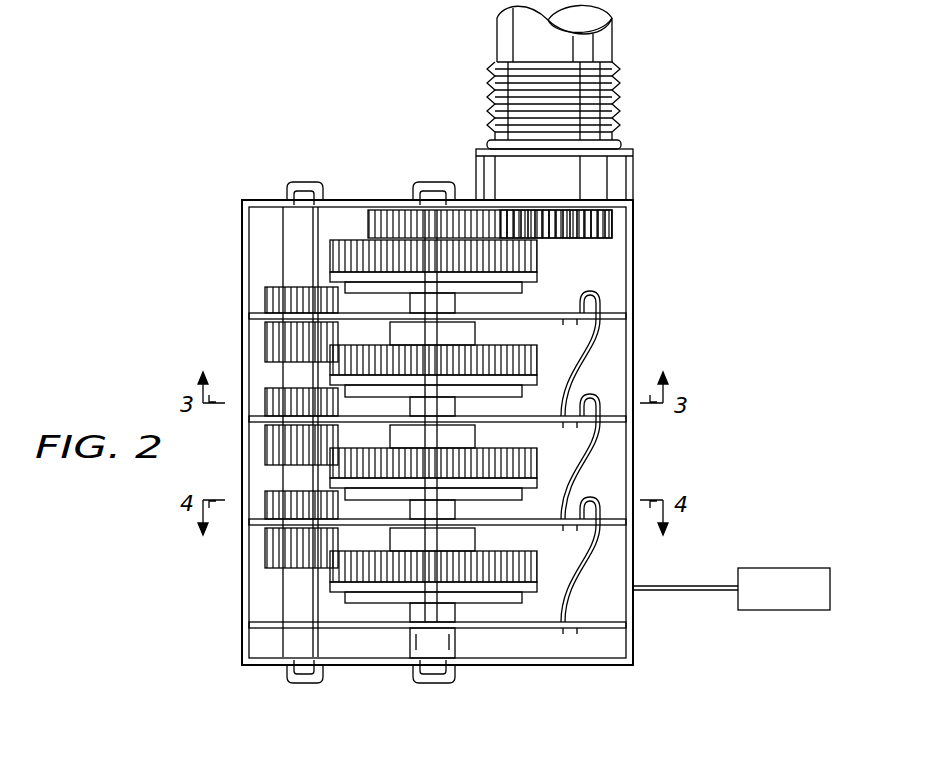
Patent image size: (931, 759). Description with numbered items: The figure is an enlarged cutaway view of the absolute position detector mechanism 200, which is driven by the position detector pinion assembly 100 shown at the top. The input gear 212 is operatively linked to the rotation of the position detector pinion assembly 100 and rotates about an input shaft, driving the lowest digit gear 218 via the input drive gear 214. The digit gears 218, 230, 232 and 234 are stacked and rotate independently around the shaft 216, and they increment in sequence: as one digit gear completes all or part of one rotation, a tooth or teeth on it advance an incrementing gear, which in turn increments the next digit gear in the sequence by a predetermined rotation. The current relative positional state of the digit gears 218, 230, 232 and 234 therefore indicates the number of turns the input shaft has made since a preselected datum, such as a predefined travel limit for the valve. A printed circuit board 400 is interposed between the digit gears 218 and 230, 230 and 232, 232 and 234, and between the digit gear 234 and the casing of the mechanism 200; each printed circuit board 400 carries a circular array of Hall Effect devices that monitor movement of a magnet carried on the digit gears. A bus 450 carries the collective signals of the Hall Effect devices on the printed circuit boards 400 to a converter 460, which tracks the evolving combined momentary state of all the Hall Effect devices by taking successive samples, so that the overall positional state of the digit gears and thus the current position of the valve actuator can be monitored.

The position detector pinion assembly 100 is at (612, 44).
The absolute position detector mechanism 200 is at (228, 612).
The input gear 212 is at (567, 240).
The input drive gear 214 is at (382, 222).
The shaft 216 is at (456, 640).
The lowest digit gear 218 is at (330, 258).
The digit gear 230 is at (537, 358).
The digit gear 232 is at (537, 462).
The digit gear 234 is at (380, 604).
The printed circuit board 400 is at (590, 322).
The bus 450 is at (683, 592).
The converter 460 is at (785, 610).